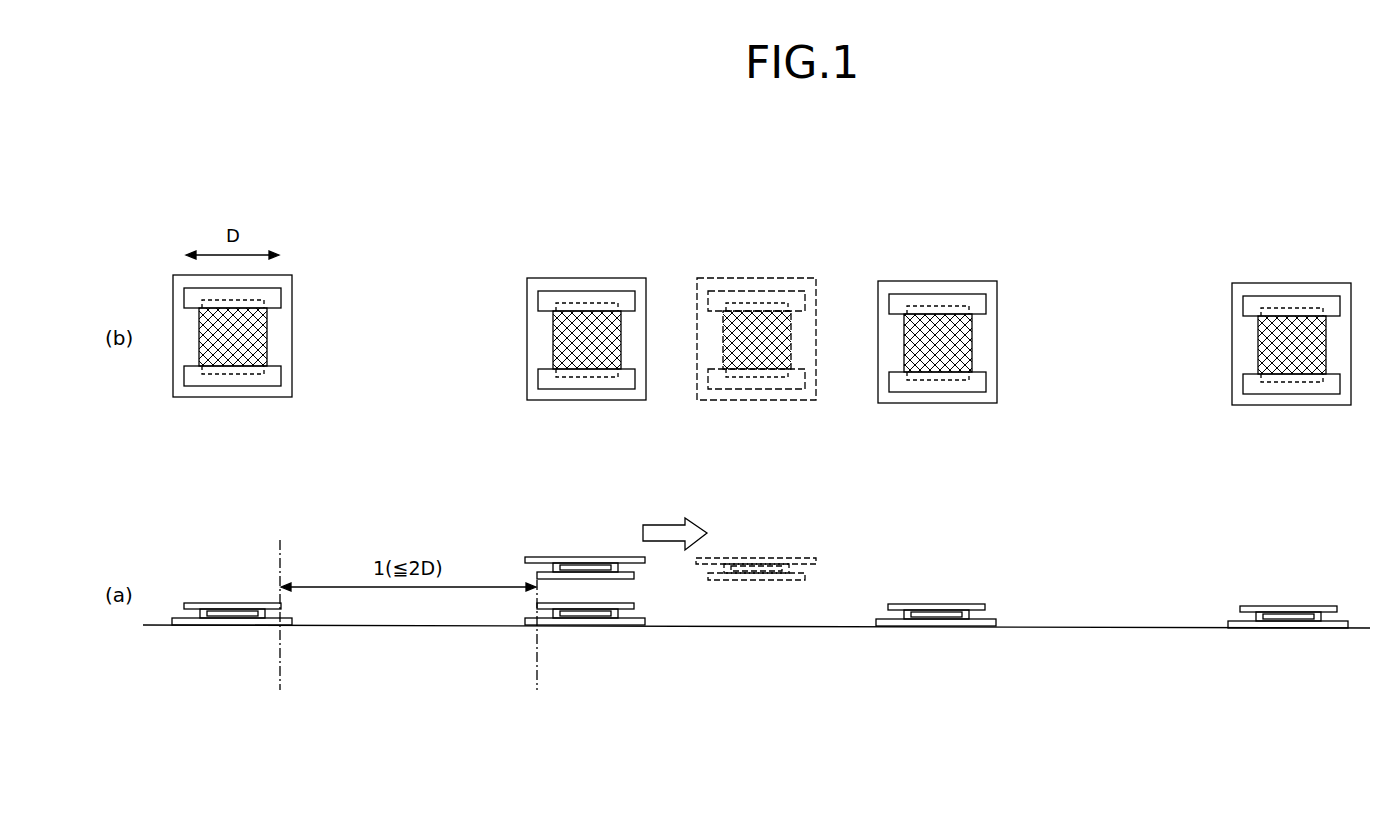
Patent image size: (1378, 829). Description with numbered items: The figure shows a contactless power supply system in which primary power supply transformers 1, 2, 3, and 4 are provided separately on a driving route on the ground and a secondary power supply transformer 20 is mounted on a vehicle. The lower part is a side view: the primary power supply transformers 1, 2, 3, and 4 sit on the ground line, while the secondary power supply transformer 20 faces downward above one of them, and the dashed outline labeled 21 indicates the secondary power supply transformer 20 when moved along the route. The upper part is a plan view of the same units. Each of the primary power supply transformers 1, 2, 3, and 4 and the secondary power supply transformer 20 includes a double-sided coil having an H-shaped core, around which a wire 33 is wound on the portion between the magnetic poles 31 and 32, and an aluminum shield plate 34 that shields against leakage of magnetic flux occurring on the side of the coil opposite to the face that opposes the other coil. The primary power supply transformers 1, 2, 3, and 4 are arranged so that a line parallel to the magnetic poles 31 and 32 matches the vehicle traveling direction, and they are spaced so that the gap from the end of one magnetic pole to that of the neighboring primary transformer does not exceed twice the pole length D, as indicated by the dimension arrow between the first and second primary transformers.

The primary power supply transformer 1 is at (233, 640).
The primary power supply transformer 2 is at (584, 641).
The primary power supply transformer 3 is at (936, 643).
The primary power supply transformer 4 is at (1290, 643).
The secondary power supply transformer 20 is at (597, 542).
The secondary power supply transformer when moved 21 is at (767, 542).
The magnetic pole 31 is at (957, 293).
The magnetic pole 32 is at (975, 393).
The wire 33 is at (972, 339).
The aluminum shield plate 34 is at (898, 280).